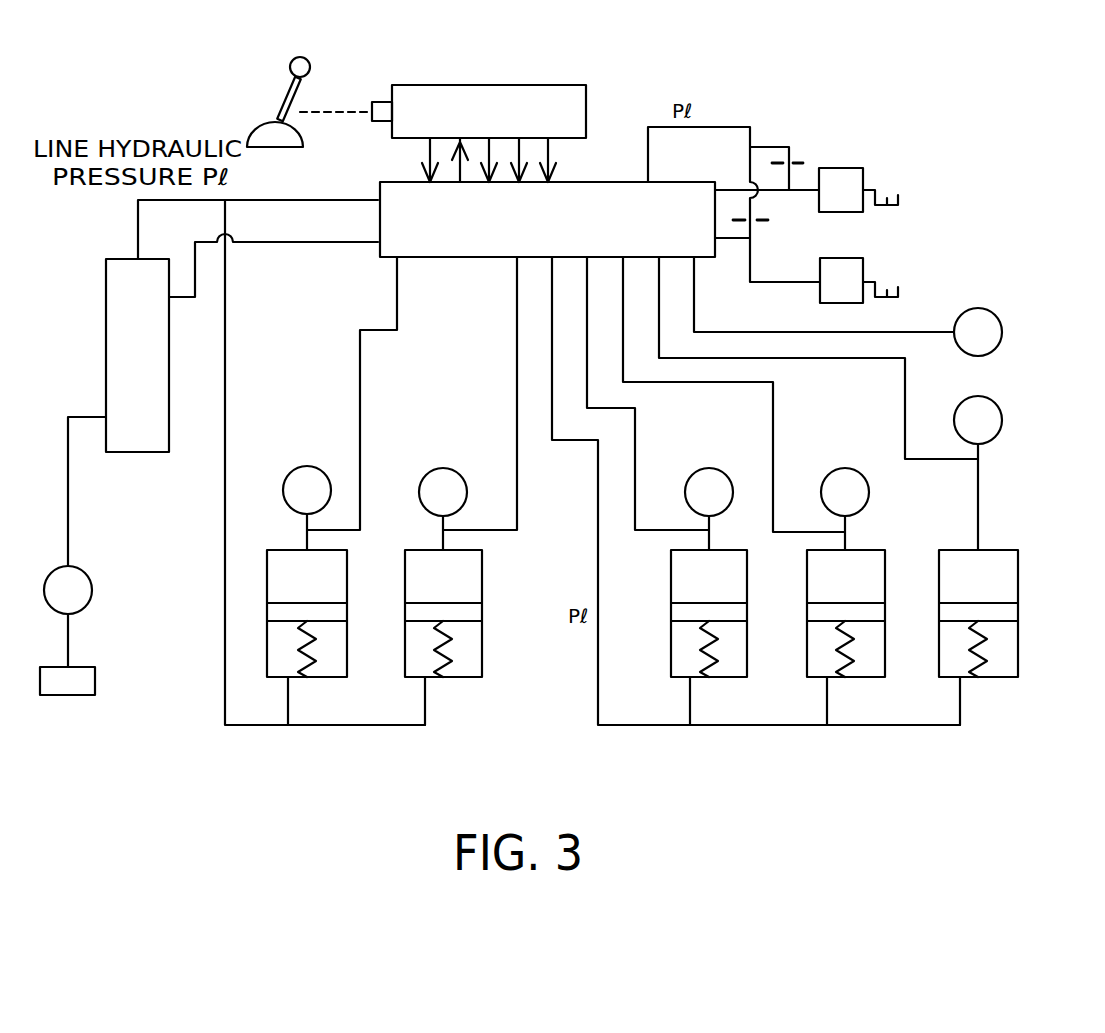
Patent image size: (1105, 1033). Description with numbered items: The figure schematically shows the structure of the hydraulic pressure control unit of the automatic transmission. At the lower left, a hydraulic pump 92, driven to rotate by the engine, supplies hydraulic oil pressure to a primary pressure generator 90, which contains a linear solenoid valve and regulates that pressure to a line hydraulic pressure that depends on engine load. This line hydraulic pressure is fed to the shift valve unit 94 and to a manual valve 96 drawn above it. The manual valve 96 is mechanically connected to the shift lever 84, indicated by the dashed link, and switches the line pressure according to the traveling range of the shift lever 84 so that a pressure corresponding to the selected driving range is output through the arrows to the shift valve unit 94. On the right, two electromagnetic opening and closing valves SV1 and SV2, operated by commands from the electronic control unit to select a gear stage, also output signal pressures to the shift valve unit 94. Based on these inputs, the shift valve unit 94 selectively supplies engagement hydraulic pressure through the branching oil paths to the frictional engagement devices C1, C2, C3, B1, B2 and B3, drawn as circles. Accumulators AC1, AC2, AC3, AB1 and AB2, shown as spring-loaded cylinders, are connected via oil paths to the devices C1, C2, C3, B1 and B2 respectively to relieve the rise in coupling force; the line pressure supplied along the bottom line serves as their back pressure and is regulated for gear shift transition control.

The shift lever 84 is at (285, 96).
The manual valve 96 is at (528, 85).
The shift valve unit 94 is at (378, 185).
The primary pressure generator 90 is at (105, 276).
The hydraulic pump 92 is at (93, 574).
The frictional engagement device B1 is at (307, 490).
The frictional engagement device C1 is at (443, 492).
The frictional engagement device C2 is at (709, 492).
The frictional engagement device B2 is at (845, 492).
The frictional engagement device B3 is at (978, 332).
The frictional engagement device C3 is at (978, 420).
The electromagnetic opening and closing valve SV1 is at (836, 168).
The electromagnetic opening and closing valve SV2 is at (838, 258).
The accumulator AB1 is at (308, 678).
The accumulator AC1 is at (442, 678).
The accumulator AC2 is at (700, 678).
The accumulator AB2 is at (845, 678).
The accumulator AC3 is at (1000, 678).